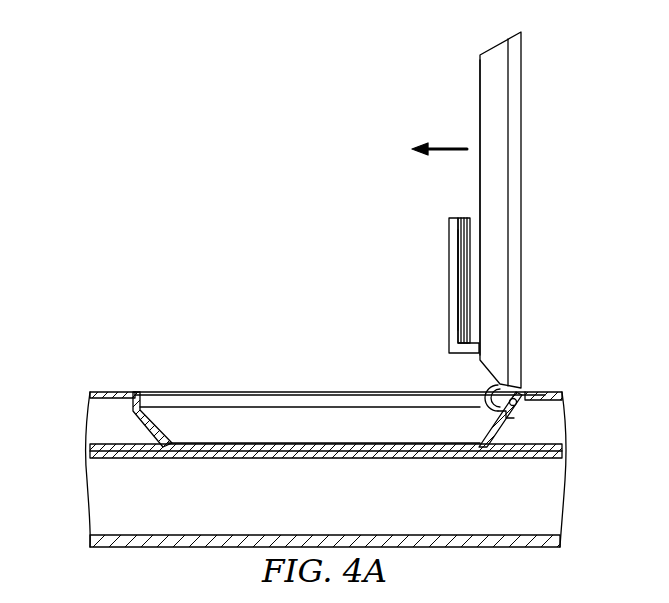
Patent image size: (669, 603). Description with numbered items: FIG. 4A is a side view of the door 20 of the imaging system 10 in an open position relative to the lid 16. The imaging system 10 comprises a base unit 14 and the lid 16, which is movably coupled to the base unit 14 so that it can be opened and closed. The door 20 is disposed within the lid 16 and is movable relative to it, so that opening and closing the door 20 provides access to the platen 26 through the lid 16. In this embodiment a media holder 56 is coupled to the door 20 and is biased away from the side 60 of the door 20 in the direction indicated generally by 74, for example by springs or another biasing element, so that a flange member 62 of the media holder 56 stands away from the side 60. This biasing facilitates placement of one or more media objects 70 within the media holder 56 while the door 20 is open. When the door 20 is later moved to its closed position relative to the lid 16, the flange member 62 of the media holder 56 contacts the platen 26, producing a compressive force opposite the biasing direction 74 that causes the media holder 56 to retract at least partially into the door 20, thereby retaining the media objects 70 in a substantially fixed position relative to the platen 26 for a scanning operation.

The imaging system 10 is at (592, 448).
The base unit 14 is at (88, 510).
The lid 16 is at (95, 392).
The door 20 is at (526, 65).
The platen 26 is at (265, 443).
The media holder 56 is at (443, 273).
The side of door 60 is at (480, 97).
The flange member 62 is at (447, 322).
The media object 70 is at (462, 218).
The biasing direction 74 is at (450, 147).